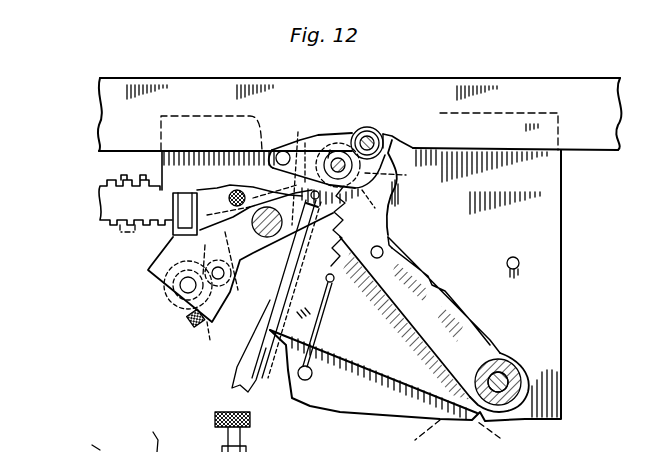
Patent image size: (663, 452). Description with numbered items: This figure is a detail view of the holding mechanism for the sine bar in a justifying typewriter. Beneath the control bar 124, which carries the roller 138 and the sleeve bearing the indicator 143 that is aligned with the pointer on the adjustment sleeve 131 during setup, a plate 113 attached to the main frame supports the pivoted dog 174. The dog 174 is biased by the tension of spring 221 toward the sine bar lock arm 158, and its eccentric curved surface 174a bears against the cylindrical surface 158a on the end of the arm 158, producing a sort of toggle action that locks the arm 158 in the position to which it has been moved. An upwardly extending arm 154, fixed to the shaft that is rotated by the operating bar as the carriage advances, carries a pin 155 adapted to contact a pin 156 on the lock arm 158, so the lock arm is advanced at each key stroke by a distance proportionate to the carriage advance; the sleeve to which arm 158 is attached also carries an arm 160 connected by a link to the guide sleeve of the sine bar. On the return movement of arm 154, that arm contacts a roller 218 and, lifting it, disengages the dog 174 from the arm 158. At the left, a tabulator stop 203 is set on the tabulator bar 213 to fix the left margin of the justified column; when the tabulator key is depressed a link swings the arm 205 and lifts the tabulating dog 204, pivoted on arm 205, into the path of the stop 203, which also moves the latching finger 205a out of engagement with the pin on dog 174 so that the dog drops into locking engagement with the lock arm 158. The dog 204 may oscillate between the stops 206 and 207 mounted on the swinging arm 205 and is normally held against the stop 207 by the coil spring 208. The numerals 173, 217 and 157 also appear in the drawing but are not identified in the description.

The control bar 124 is at (578, 88).
The plate 113 is at (545, 218).
The tabulator bar 213 is at (118, 196).
The tabulator stop 203 is at (175, 232).
The swinging arm 205 is at (283, 282).
The latching finger 205a is at (322, 150).
The tabulating dog 204 is at (172, 282).
The stop 206 is at (218, 267).
The stop 207 is at (189, 325).
The coil spring 208 is at (212, 344).
The dog 174 is at (339, 145).
The eccentric curved surface 174a is at (407, 188).
The shaft 173 is at (330, 148).
The pulley 217 is at (385, 138).
The roller 218 is at (381, 133).
The arm 154 is at (377, 228).
The pin 155 is at (426, 270).
The pin 156 is at (388, 237).
The pin 157 is at (522, 261).
The spring 221 is at (405, 318).
The arm 160 is at (474, 402).
The sine bar lock arm 158 is at (373, 346).
The cylindrical surface 158a is at (281, 291).
The roller 138 is at (213, 432).
The indicator 143 is at (152, 434).
The adjustment sleeve 131 is at (78, 442).